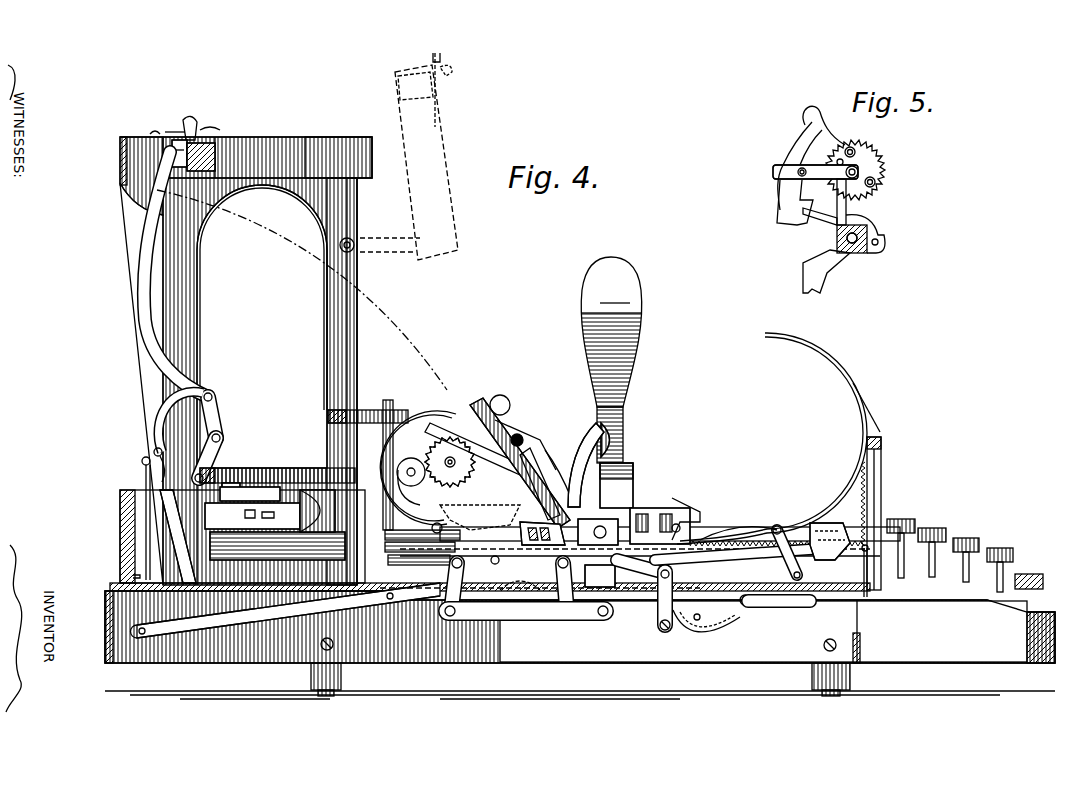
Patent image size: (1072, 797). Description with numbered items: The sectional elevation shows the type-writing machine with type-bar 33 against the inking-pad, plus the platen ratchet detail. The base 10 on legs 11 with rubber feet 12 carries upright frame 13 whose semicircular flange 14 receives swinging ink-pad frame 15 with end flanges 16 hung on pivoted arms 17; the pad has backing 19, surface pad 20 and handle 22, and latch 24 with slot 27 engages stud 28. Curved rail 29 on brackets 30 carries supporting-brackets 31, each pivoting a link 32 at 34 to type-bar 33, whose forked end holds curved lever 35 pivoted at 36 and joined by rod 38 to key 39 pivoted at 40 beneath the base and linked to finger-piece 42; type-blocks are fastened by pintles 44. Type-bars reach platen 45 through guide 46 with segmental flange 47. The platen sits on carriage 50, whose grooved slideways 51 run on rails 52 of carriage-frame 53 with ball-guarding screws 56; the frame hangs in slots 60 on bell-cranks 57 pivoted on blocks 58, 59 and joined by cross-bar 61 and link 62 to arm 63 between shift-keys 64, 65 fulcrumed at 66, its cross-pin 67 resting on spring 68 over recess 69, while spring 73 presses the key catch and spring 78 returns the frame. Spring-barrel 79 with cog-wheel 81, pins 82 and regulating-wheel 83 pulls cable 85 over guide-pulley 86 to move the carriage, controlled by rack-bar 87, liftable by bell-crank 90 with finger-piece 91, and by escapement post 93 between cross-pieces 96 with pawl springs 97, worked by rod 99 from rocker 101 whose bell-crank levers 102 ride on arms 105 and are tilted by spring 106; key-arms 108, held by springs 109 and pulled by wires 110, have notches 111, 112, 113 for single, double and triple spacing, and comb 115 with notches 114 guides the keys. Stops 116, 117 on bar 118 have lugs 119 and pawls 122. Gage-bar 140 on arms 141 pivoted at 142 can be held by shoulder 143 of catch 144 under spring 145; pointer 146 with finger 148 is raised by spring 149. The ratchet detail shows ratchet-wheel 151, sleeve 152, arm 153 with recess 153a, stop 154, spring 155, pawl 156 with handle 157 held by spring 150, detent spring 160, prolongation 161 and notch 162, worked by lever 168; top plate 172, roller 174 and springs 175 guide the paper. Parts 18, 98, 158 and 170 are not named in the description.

In FIG. 4, the base 10 is at (580, 627).
In FIG. 4, the detachable legs 11 is at (341, 670).
In FIG. 4, the rubber feet 12 is at (334, 693).
In FIG. 4, the upright frame 13 is at (122, 160).
In FIG. 4, the semicircular flange 14 is at (132, 130).
In FIG. 4, the ink-pad frame 15 is at (345, 140).
In FIG. 4, the outturned end flanges 16 is at (246, 196).
In FIG. 4, the arms 17 is at (357, 200).
In FIG. 4, the pivot screw 18 is at (355, 238).
In FIG. 4, the rigid backing 19 is at (237, 142).
In FIG. 4, the surface pad 20 is at (218, 131).
In FIG. 4, the vertical handle 22 is at (197, 122).
In FIG. 4, the latch 24 is at (210, 150).
In FIG. 4, the slot 27 is at (150, 132).
In FIG. 4, the screw or stud 28 is at (166, 132).
In FIG. 4, the curved rail 29 is at (272, 465).
In FIG. 4, the brackets 30 is at (186, 560).
In FIG. 4, the supporting-brackets 31 is at (156, 456).
In FIG. 4, the link 32 is at (205, 470).
In FIG. 4, the type-bar 33 is at (205, 390).
In FIG. 4, the pivot 34 is at (222, 440).
In FIG. 4, the curved lever 35 is at (170, 406).
In FIG. 4, the pivot 36 is at (155, 445).
In FIG. 4, the rod 38 is at (124, 575).
In FIG. 4, the key 39 is at (286, 610).
In FIG. 4, the pivot 40 is at (387, 596).
In FIG. 4, the finger-piece 42 is at (955, 520).
In FIG. 4, the pintles 44 is at (1020, 571).
In FIG. 4, the platen 45 is at (470, 418).
In FIG. 4, the guide 46 is at (327, 418).
In FIG. 4, the vertical segmental flange 47 is at (392, 392).
In FIG. 4, the carriage 50 is at (530, 480).
In FIG. 4, the slideways 51 is at (661, 508).
In FIG. 5, the slideways 51 is at (855, 253).
In FIG. 4, the grooved rails 52 is at (670, 530).
In FIG. 5, the grooved rails 52 is at (837, 240).
In FIG. 4, the carriage-frame 53 is at (536, 597).
In FIG. 5, the carriage-frame 53 is at (840, 252).
In FIG. 4, the screws 56 is at (648, 510).
In FIG. 4, the bell-cranks 57 is at (700, 545).
In FIG. 4, the blocks 58 is at (448, 578).
In FIG. 4, the blocks 59 is at (603, 576).
In FIG. 4, the slots 60 is at (641, 591).
In FIG. 4, the cross-bar 61 is at (425, 525).
In FIG. 4, the link 62 is at (662, 614).
In FIG. 4, the arm 63 is at (660, 634).
In FIG. 4, the shift-key 64 is at (697, 617).
In FIG. 4, the shift-key 65 is at (790, 605).
In FIG. 4, the pivot 66 is at (735, 622).
In FIG. 4, the cross-pin 67 is at (740, 608).
In FIG. 4, the spring 68 is at (690, 625).
In FIG. 4, the recess 69 is at (700, 625).
In FIG. 4, the spring 73 is at (121, 548).
In FIG. 4, the spring 78 is at (560, 609).
In FIG. 4, the spring-barrel 79 is at (298, 605).
In FIG. 4, the cog-wheel 81 is at (295, 530).
In FIG. 4, the pins 82 is at (244, 530).
In FIG. 4, the regulating-wheel 83 is at (232, 482).
In FIG. 4, the cable 85 is at (352, 588).
In FIG. 4, the guide-pulley 86 is at (410, 530).
In FIG. 4, the rack-bar 87 is at (542, 533).
In FIG. 4, the bell-crank 90 is at (578, 440).
In FIG. 4, the finger-piece 91 is at (622, 445).
In FIG. 4, the hollow post 93 is at (520, 580).
In FIG. 4, the cross-pieces 96 is at (520, 599).
In FIG. 4, the springs 97 is at (141, 461).
In FIG. 4, the rod 98 is at (144, 474).
In FIG. 4, the rod 99 is at (744, 528).
In FIG. 4, the rocker 101 is at (790, 554).
In FIG. 4, the bell-crank levers 102 is at (742, 560).
In FIG. 4, the arms 105 is at (779, 525).
In FIG. 4, the spring 106 is at (760, 520).
In FIG. 4, the key-arms 108 is at (828, 524).
In FIG. 4, the springs 109 is at (870, 500).
In FIG. 4, the wires or rods 110 is at (870, 572).
In FIG. 4, the notch 111 is at (838, 500).
In FIG. 4, the notch 112 is at (850, 545).
In FIG. 4, the notch 113 is at (880, 530).
In FIG. 4, the notches 114 is at (860, 640).
In FIG. 4, the comb 115 is at (850, 652).
In FIG. 4, the stop 116 is at (852, 372).
In FIG. 4, the stop 117 is at (882, 458).
In FIG. 4, the bar 118 is at (882, 478).
In FIG. 4, the lugs 119 is at (686, 505).
In FIG. 4, the pawls 122 is at (692, 500).
In FIG. 4, the gage-bar 140 is at (495, 402).
In FIG. 4, the arms 141 is at (525, 444).
In FIG. 4, the pivot 142 is at (480, 492).
In FIG. 4, the shoulder 143 is at (425, 418).
In FIG. 4, the catch 144 is at (520, 436).
In FIG. 4, the spring 145 is at (555, 475).
In FIG. 4, the curved pointer 146 is at (314, 291).
In FIG. 4, the finger 148 is at (425, 555).
In FIG. 4, the spring 149 is at (470, 473).
In FIG. 4, the pawl spring 150 is at (450, 462).
In FIG. 5, the ratchet-wheel 151 is at (815, 118).
In FIG. 5, the sleeve 152 is at (860, 173).
In FIG. 5, the arm 153 is at (780, 178).
In FIG. 5, the recess 153a is at (797, 172).
In FIG. 5, the stop 154 is at (848, 196).
In FIG. 5, the spring 155 is at (788, 160).
In FIG. 5, the pawl 156 is at (808, 140).
In FIG. 5, the handle 157 is at (880, 162).
In FIG. 5, the tooth 158 is at (830, 134).
In FIG. 5, the spring 160 is at (824, 218).
In FIG. 5, the prolongation 161 is at (792, 220).
In FIG. 5, the notch 162 is at (790, 205).
In FIG. 4, the lever 168 is at (630, 393).
In FIG. 4, the block 170 is at (633, 470).
In FIG. 4, the top plate 172 is at (406, 476).
In FIG. 4, the small roller 174 is at (404, 500).
In FIG. 4, the springs 175 is at (430, 500).